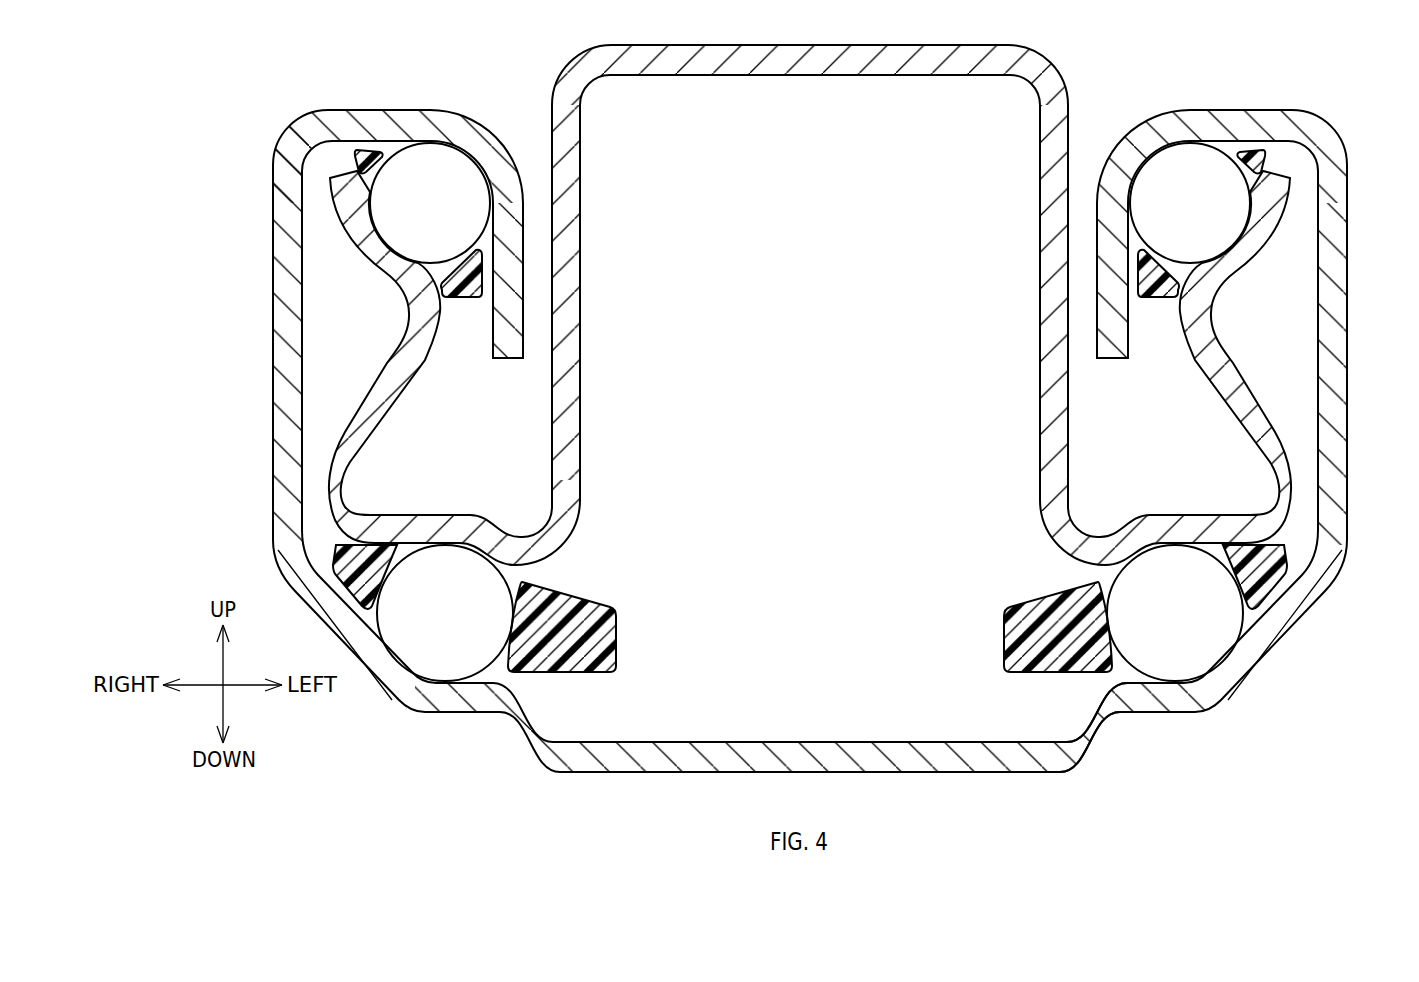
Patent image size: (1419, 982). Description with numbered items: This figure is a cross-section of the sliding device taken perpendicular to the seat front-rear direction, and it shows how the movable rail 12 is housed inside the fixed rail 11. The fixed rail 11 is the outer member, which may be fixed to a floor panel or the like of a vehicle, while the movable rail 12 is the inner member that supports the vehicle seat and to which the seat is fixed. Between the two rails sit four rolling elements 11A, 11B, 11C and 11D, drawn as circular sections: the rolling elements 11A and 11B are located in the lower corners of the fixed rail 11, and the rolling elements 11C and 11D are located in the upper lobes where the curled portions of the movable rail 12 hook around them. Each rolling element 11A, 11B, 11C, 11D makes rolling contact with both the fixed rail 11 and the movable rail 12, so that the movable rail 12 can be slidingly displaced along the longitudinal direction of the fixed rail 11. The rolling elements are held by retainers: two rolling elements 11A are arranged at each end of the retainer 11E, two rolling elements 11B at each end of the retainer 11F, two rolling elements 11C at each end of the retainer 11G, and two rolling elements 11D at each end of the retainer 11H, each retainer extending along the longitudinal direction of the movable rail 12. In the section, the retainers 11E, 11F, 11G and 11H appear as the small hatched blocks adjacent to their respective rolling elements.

The fixed rail 11 is at (1288, 640).
The movable rail 12 is at (1065, 84).
The rolling element 11A is at (1190, 645).
The rolling element 11B is at (428, 643).
The rolling element 11C is at (1188, 172).
The rolling element 11D is at (422, 165).
The retainer 11E is at (1057, 675).
The retainer 11F is at (553, 677).
The retainer 11G is at (1247, 158).
The retainer 11H is at (368, 156).